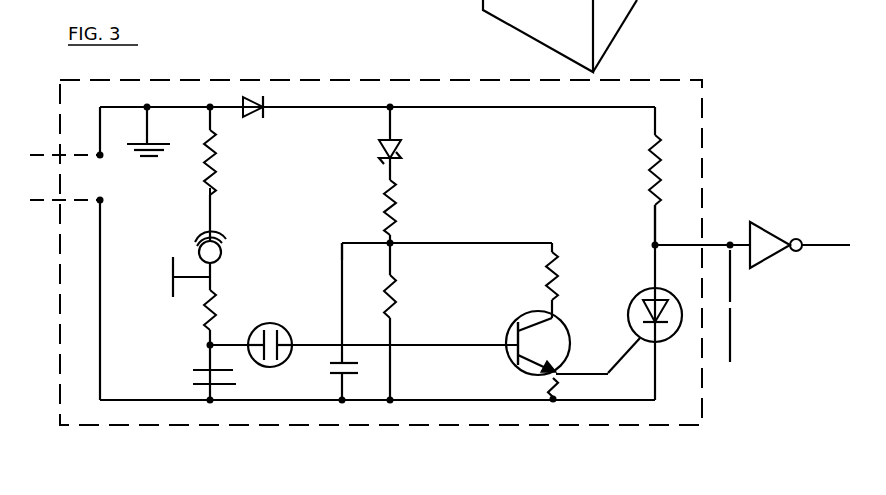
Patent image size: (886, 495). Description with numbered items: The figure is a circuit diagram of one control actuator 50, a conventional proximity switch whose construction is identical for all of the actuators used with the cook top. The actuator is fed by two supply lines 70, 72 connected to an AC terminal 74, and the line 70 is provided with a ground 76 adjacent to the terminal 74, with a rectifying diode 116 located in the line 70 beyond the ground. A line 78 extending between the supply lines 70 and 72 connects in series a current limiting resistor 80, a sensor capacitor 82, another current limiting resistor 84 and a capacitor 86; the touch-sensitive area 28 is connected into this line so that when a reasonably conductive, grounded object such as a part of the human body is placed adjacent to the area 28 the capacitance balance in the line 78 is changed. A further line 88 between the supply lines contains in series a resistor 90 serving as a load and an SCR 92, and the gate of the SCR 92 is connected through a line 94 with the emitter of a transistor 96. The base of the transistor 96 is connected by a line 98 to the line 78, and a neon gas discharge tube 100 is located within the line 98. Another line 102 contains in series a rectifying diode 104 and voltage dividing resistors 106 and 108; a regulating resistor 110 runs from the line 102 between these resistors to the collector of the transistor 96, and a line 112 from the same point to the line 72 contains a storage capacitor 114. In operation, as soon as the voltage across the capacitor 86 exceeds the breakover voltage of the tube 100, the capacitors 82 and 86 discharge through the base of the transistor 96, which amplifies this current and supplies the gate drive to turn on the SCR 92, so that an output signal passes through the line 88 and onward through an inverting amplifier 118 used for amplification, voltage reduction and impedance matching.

The area 28 is at (170, 277).
The control actuator 50 is at (423, 68).
The supply line 70 is at (45, 156).
The supply line 72 is at (283, 403).
The AC terminal 74 is at (103, 178).
The ground 76 is at (142, 150).
The line 78 is at (215, 137).
The current limiting resistor 80 is at (214, 190).
The sensor capacitor 82 is at (200, 247).
The current limiting resistor 84 is at (205, 312).
The capacitor 86 is at (195, 378).
The line 88 is at (650, 222).
The resistor 90 is at (669, 170).
The SCR 92 is at (673, 335).
The line 94 is at (603, 375).
The transistor 96 is at (524, 372).
The line 98 is at (480, 344).
The neon gas discharge tube 100 is at (288, 306).
The line 102 is at (382, 174).
The rectifying diode 104 is at (378, 150).
The voltage dividing resistor 106 is at (355, 207).
The voltage dividing resistor 108 is at (396, 304).
The regulating resistor 110 is at (548, 260).
The line 112 is at (342, 268).
The storage capacitor 114 is at (340, 374).
The rectifying diode 116 is at (252, 117).
The inverting amplifier 118 is at (778, 262).